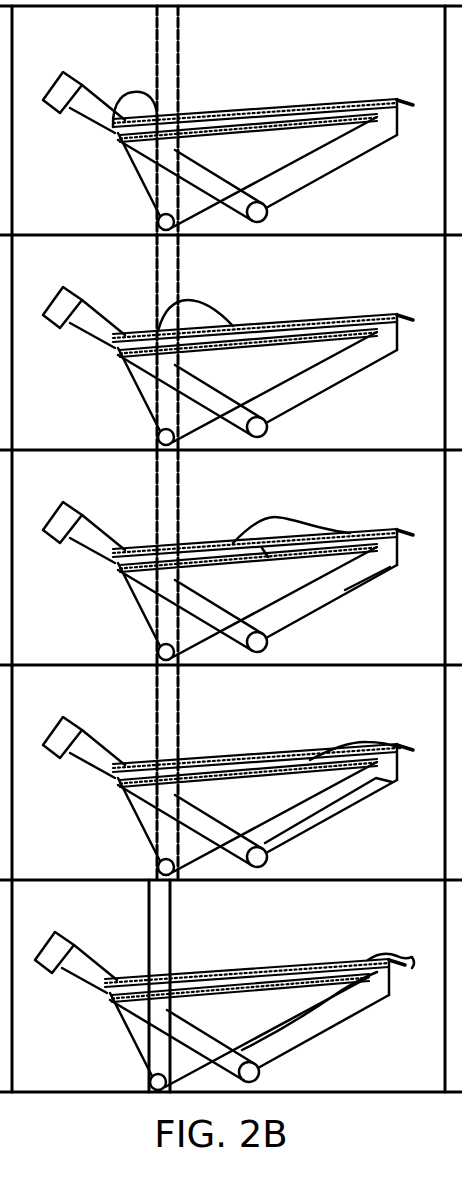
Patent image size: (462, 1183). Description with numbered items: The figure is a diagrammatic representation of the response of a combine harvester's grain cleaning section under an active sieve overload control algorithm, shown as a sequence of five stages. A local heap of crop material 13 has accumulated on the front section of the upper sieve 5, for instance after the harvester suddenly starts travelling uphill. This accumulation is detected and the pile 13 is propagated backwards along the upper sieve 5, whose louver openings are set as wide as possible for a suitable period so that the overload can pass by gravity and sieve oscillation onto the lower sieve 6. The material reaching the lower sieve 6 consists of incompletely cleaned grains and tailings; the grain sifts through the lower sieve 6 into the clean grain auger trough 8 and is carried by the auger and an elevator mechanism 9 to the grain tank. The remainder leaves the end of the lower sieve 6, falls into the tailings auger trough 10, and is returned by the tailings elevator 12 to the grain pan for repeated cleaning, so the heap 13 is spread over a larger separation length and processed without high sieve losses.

The upper sieve 5 is at (250, 110).
The lower sieve 6 is at (293, 111).
The clean grain auger trough 8 is at (157, 223).
The elevator mechanism 9 is at (178, 55).
The tailings auger trough 10 is at (267, 213).
The tailings elevator 12 is at (83, 113).
The crop material 13 is at (127, 92).